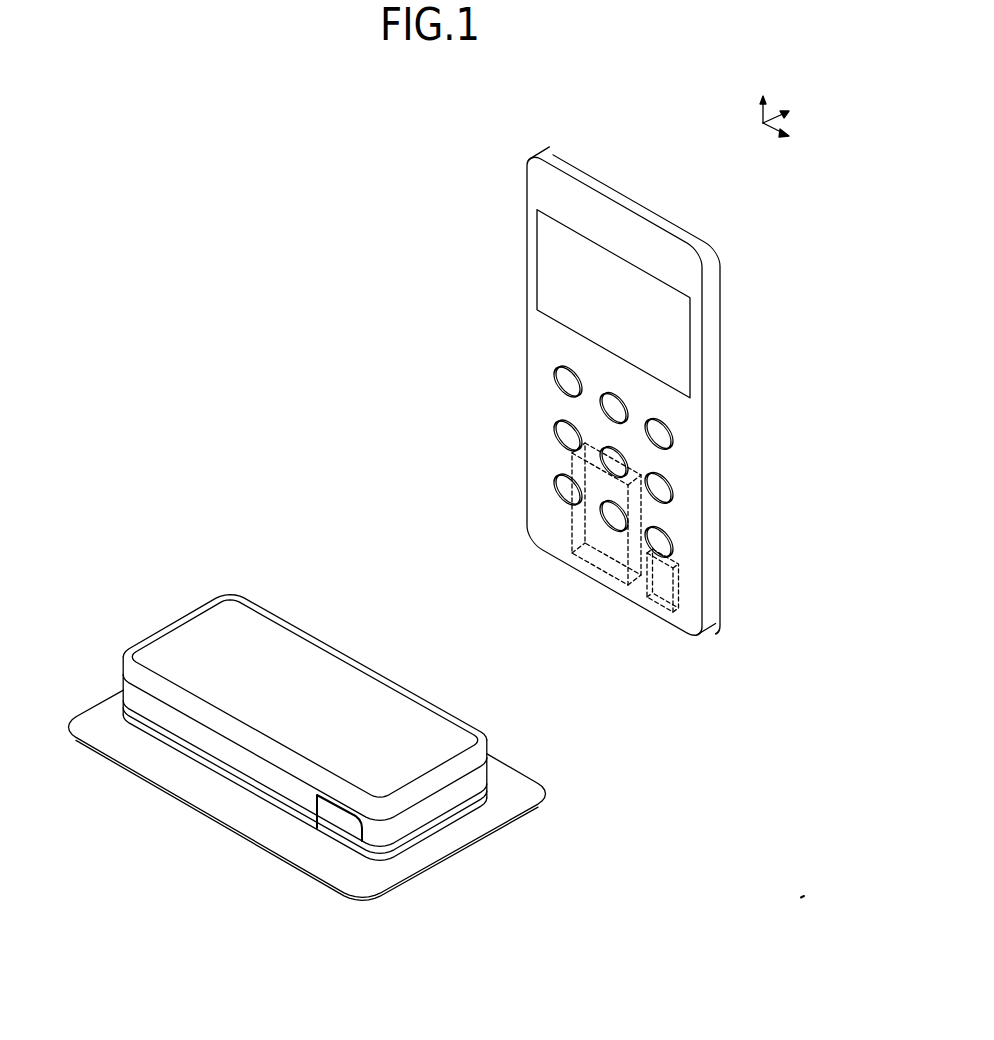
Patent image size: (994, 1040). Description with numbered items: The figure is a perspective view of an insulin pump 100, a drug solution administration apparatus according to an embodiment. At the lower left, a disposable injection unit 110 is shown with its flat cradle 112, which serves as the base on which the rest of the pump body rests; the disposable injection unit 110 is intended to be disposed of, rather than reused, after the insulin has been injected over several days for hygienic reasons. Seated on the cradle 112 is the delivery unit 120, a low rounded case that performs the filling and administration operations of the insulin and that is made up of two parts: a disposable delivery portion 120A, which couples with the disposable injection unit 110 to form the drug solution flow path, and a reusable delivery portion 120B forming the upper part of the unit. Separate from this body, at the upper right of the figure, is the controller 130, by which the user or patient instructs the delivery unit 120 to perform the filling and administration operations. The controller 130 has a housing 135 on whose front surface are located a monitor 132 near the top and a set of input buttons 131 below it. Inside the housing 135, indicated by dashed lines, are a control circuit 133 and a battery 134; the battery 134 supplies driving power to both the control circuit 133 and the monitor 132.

The insulin pump 100 is at (108, 126).
The disposable injection unit 110 is at (196, 828).
The cradle 112 is at (255, 836).
The delivery unit 120 is at (378, 645).
The disposable delivery portion 120A is at (343, 814).
The reusable delivery portion 120B is at (394, 697).
The controller 130 is at (690, 196).
The input button 131 is at (564, 382).
The monitor 132 is at (548, 278).
The control circuit 133 is at (582, 563).
The battery 134 is at (648, 606).
The housing 135 is at (719, 373).